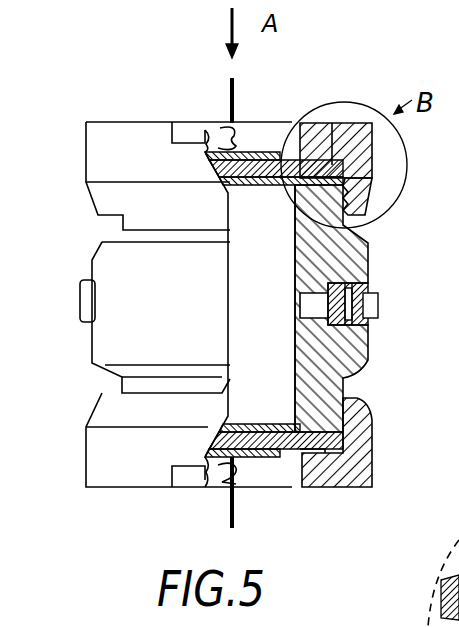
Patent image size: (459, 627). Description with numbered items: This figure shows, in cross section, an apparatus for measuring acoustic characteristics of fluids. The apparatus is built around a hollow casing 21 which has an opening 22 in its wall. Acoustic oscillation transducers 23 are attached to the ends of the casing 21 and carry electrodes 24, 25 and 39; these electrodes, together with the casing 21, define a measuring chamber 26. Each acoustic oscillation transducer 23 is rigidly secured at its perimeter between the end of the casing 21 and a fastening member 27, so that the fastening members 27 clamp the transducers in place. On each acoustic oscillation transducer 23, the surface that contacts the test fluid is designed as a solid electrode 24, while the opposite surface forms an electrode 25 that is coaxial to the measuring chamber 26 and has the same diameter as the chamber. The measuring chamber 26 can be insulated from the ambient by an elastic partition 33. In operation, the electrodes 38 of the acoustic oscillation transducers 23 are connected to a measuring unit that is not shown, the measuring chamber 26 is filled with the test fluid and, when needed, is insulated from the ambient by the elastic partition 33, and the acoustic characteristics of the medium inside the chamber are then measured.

The hollow casing 21 is at (108, 337).
The opening 22 is at (318, 292).
The acoustic oscillation transducer 23 is at (257, 156).
The solid electrode 24 is at (280, 458).
The electrode 25 is at (343, 180).
The measuring chamber 26 is at (278, 358).
The fastening member 27 is at (372, 432).
The elastic partition 33 is at (378, 289).
The electrode 38 is at (230, 95).
The electrode 39 is at (268, 152).